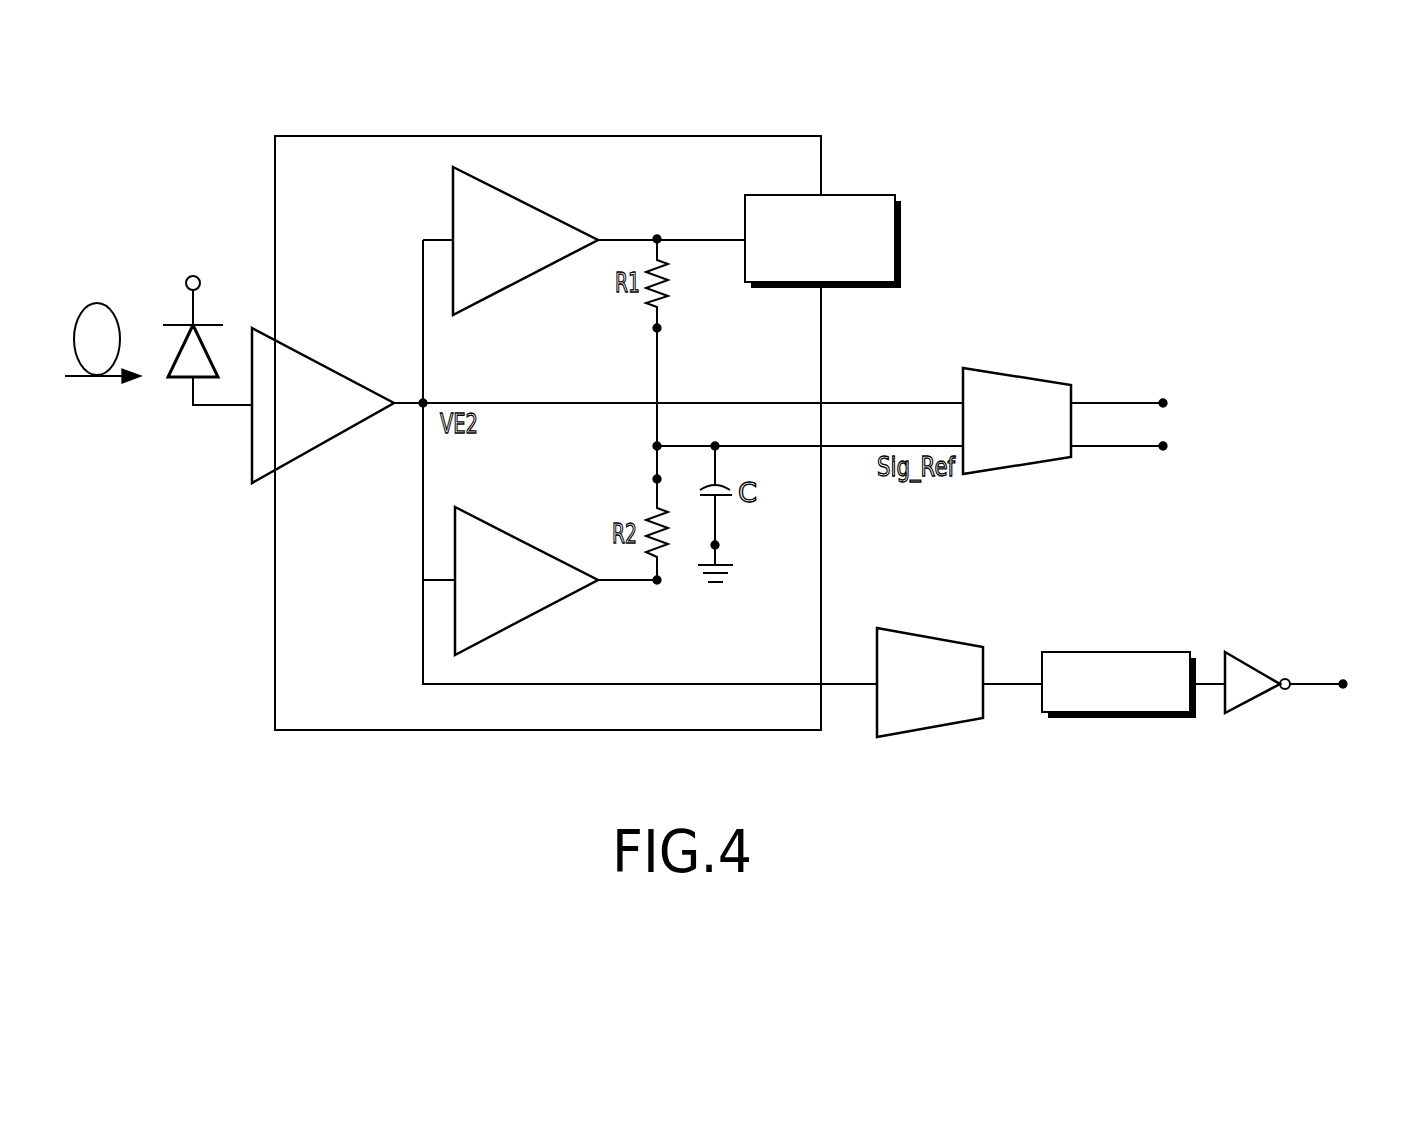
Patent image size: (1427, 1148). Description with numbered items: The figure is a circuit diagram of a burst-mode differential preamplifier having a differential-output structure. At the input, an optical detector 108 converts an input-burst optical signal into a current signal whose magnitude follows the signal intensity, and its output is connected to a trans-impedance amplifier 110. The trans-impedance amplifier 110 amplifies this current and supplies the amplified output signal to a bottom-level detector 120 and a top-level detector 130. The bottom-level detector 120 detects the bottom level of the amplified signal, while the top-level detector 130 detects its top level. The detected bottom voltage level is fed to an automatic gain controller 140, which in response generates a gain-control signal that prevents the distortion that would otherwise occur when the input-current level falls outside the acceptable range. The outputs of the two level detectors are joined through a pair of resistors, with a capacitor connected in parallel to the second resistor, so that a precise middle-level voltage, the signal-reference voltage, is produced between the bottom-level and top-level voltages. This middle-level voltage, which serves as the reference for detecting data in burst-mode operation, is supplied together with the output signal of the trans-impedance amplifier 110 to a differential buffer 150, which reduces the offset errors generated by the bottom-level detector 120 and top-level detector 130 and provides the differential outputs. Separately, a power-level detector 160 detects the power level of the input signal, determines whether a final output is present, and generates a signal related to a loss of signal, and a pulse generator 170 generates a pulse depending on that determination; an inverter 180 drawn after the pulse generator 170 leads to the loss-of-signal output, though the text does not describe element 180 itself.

The optical detector 108 is at (187, 380).
The trans-impedance amplifier (TIA) 110 is at (302, 350).
The bottom-level detector 120 is at (525, 203).
The top-level detector 130 is at (525, 542).
The automatic gain controller (AGC) 140 is at (901, 240).
The differential buffer 150 is at (1017, 375).
The power-level detector 160 is at (953, 648).
The pulse generator 170 is at (1113, 652).
The inverter 180 is at (1250, 660).